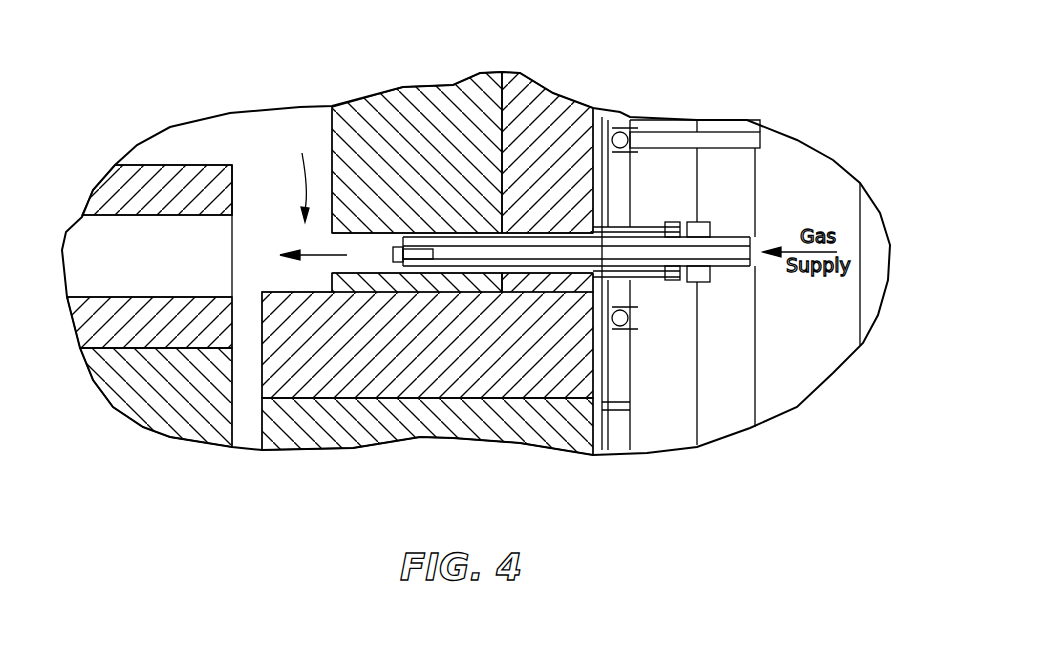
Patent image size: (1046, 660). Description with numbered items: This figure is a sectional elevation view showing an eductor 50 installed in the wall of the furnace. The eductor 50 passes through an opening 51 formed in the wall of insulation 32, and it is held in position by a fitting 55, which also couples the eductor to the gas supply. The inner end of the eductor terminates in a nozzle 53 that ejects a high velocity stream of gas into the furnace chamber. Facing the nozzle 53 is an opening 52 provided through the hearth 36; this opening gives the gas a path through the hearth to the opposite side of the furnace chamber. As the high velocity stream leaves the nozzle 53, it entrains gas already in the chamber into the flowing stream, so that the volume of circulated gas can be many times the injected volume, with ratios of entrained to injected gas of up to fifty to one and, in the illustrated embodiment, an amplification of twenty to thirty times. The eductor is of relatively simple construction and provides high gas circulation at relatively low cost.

The wall of insulation 32 is at (435, 95).
The hearth 36 is at (163, 235).
The eductor 50 is at (527, 238).
The opening 51 is at (350, 263).
The opening 52 is at (157, 275).
The nozzle 53 is at (395, 250).
The fitting 55 is at (640, 227).